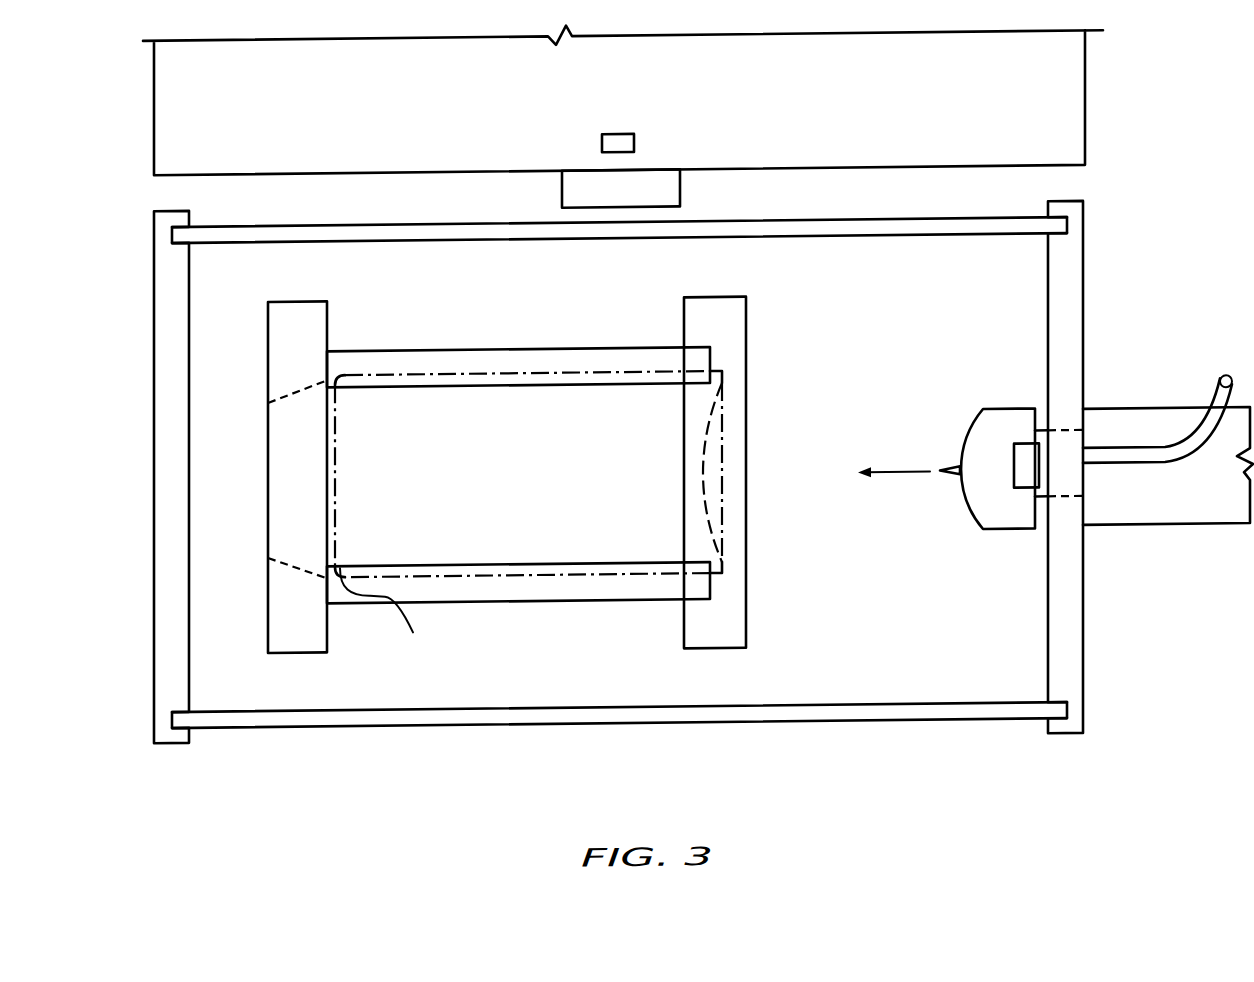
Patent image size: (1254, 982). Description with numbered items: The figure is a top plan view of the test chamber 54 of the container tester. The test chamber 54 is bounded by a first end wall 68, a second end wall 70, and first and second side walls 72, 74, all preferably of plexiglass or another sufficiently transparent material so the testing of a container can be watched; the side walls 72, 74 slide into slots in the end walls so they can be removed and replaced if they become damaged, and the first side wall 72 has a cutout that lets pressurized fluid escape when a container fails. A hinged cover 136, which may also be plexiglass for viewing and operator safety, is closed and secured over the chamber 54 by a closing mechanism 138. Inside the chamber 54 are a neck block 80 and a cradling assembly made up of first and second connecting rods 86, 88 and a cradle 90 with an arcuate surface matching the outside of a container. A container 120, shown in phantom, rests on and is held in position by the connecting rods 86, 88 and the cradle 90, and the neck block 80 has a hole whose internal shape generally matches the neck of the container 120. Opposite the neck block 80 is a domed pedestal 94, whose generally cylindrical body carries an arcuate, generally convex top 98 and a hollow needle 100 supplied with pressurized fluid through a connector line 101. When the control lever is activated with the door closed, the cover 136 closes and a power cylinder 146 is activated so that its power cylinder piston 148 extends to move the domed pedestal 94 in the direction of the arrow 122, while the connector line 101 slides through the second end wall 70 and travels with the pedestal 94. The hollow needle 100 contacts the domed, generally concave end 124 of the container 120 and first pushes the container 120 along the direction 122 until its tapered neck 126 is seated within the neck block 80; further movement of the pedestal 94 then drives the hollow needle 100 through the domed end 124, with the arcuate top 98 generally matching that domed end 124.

The test chamber 54 is at (762, 746).
The first end wall 68 is at (154, 602).
The second end wall 70 is at (1075, 668).
The first side wall 72 is at (265, 231).
The second side wall 74 is at (253, 731).
The neck block 80 is at (328, 633).
The first connecting rod 86 is at (608, 354).
The second connecting rod 88 is at (660, 592).
The cradle 90 is at (727, 628).
The domed pedestal 94 is at (1004, 393).
The arcuate top 98 is at (966, 451).
The hollow needle 100 is at (940, 485).
The connector line 101 is at (1125, 460).
The container 120 is at (530, 583).
The arrow 122 is at (912, 458).
The domed end 124 is at (725, 548).
The tapered neck 126 is at (400, 610).
The hinged cover 136 is at (1085, 127).
The closing mechanism 138 is at (680, 194).
The power cylinder 146 is at (1135, 538).
The power cylinder piston 148 is at (1062, 509).